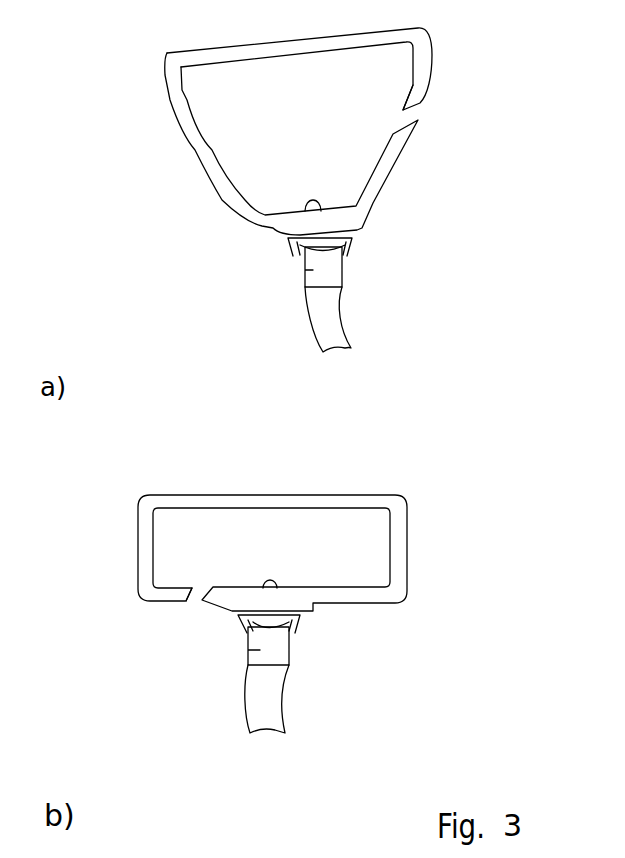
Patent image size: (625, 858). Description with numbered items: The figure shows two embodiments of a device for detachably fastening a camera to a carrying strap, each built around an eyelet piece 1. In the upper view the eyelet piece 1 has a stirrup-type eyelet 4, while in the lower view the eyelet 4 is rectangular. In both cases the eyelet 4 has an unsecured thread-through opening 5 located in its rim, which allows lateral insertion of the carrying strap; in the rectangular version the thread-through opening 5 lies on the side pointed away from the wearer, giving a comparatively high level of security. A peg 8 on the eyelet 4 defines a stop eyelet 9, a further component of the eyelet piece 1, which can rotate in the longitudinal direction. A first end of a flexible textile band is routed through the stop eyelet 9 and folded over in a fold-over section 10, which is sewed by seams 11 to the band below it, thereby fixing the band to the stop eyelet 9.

In FIG. 3b, the eyelet piece 1 is at (99, 574).
In FIG. 3a, the eyelet 4 is at (440, 47).
In FIG. 3b, the eyelet 4 is at (398, 532).
In FIG. 3a, the thread-through opening 5 is at (420, 110).
In FIG. 3b, the thread-through opening 5 is at (193, 602).
In FIG. 3a, the peg 8 is at (320, 204).
In FIG. 3b, the peg 8 is at (277, 584).
In FIG. 3a, the stop eyelet 9 is at (348, 252).
In FIG. 3b, the stop eyelet 9 is at (303, 634).
In FIG. 3a, the fold-over section 10 is at (313, 270).
In FIG. 3b, the fold-over section 10 is at (247, 650).
In FIG. 3a, the seams 11 is at (303, 281).
In FIG. 3b, the seams 11 is at (247, 655).